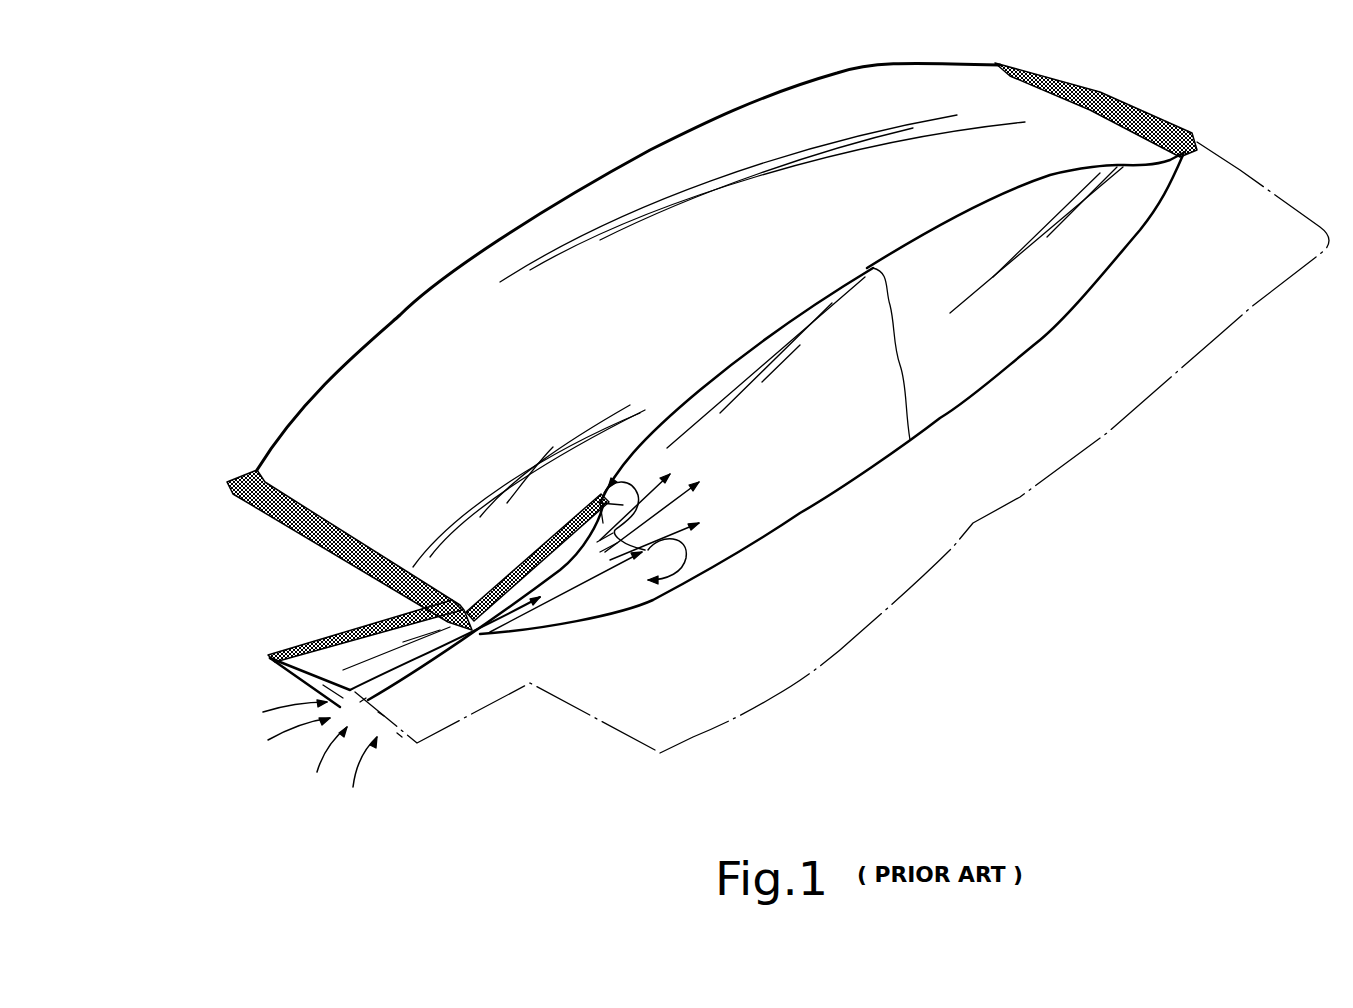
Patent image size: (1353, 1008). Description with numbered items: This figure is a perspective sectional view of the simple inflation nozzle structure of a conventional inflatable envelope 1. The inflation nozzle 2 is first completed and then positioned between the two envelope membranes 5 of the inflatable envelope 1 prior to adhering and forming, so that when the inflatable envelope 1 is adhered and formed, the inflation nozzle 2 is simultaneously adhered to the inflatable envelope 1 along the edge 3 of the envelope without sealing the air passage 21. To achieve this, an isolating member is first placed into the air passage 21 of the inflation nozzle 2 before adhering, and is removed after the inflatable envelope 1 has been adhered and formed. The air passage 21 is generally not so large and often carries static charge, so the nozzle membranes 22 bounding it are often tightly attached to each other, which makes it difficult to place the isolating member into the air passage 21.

The inflatable envelope 1 is at (383, 317).
The inflation nozzle 2 is at (283, 635).
The edge of the envelope 3 is at (237, 493).
The envelope membranes 5 is at (898, 337).
The air passage 21 is at (368, 700).
The nozzle membranes 22 is at (545, 597).